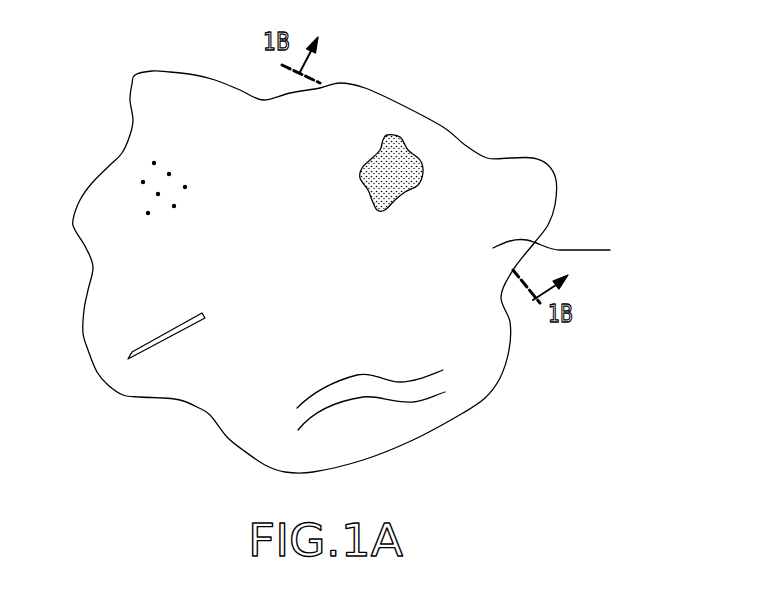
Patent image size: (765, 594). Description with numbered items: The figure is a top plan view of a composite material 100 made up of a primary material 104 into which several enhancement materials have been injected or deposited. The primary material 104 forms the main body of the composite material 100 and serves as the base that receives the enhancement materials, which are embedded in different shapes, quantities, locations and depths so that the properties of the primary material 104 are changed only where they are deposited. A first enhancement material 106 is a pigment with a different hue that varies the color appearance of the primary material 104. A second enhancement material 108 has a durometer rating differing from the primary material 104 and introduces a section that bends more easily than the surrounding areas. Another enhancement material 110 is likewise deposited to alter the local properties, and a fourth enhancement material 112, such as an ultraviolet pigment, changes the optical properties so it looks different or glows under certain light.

The composite material 100 is at (573, 102).
The primary material 104 is at (570, 249).
The first enhancement material 106 is at (407, 137).
The second enhancement material 108 is at (395, 380).
The enhancement material 110 is at (155, 347).
The fourth enhancement material 112 is at (132, 202).